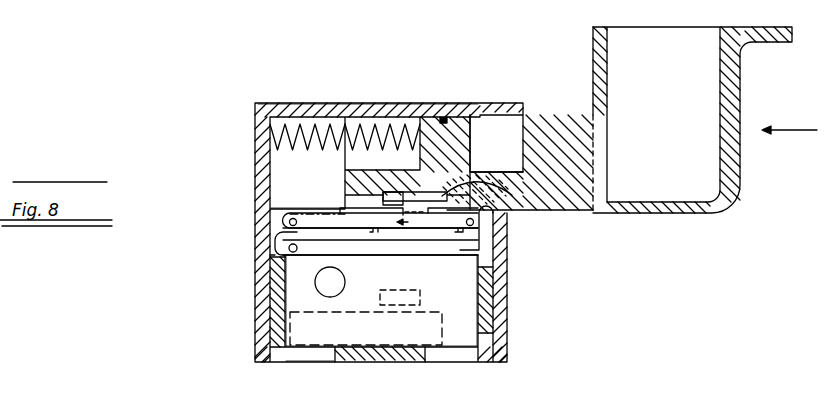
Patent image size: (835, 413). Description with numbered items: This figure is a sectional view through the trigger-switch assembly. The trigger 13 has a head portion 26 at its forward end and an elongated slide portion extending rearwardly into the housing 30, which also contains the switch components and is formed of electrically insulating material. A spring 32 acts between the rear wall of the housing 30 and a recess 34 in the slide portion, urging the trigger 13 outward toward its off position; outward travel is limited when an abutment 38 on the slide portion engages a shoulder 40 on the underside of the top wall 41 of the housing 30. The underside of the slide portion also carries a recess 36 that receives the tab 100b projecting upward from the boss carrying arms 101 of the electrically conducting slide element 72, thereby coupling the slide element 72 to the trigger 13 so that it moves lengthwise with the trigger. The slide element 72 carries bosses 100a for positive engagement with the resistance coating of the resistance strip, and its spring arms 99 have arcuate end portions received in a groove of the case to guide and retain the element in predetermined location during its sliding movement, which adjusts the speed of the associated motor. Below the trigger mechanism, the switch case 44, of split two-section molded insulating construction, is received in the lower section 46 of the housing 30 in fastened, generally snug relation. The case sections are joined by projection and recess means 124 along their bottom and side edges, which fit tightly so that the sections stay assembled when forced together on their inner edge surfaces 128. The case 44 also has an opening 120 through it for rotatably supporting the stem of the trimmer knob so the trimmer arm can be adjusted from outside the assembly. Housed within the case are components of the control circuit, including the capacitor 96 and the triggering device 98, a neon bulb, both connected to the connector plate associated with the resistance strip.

The trigger 13 is at (738, 162).
The head portion 26 is at (593, 47).
The housing 30 is at (254, 153).
The spring 32 is at (284, 127).
The recess 34 is at (420, 157).
The recess 36 is at (373, 193).
The abutment 38 is at (444, 118).
The shoulder 40 is at (480, 116).
The top wall 41 is at (300, 103).
The switch case 44 is at (457, 332).
The lower section 46 is at (508, 302).
The slide element 72 is at (268, 224).
The capacitor 96 is at (318, 313).
The triggering device 98 is at (379, 292).
The spring arms 99 is at (393, 242).
The bosses 100a is at (367, 213).
The tab 100b is at (531, 162).
The boss carrying arms 101 is at (409, 183).
The opening 120 is at (318, 284).
The projection and recess means 124 is at (270, 275).
The inner edge surfaces 128 is at (305, 356).